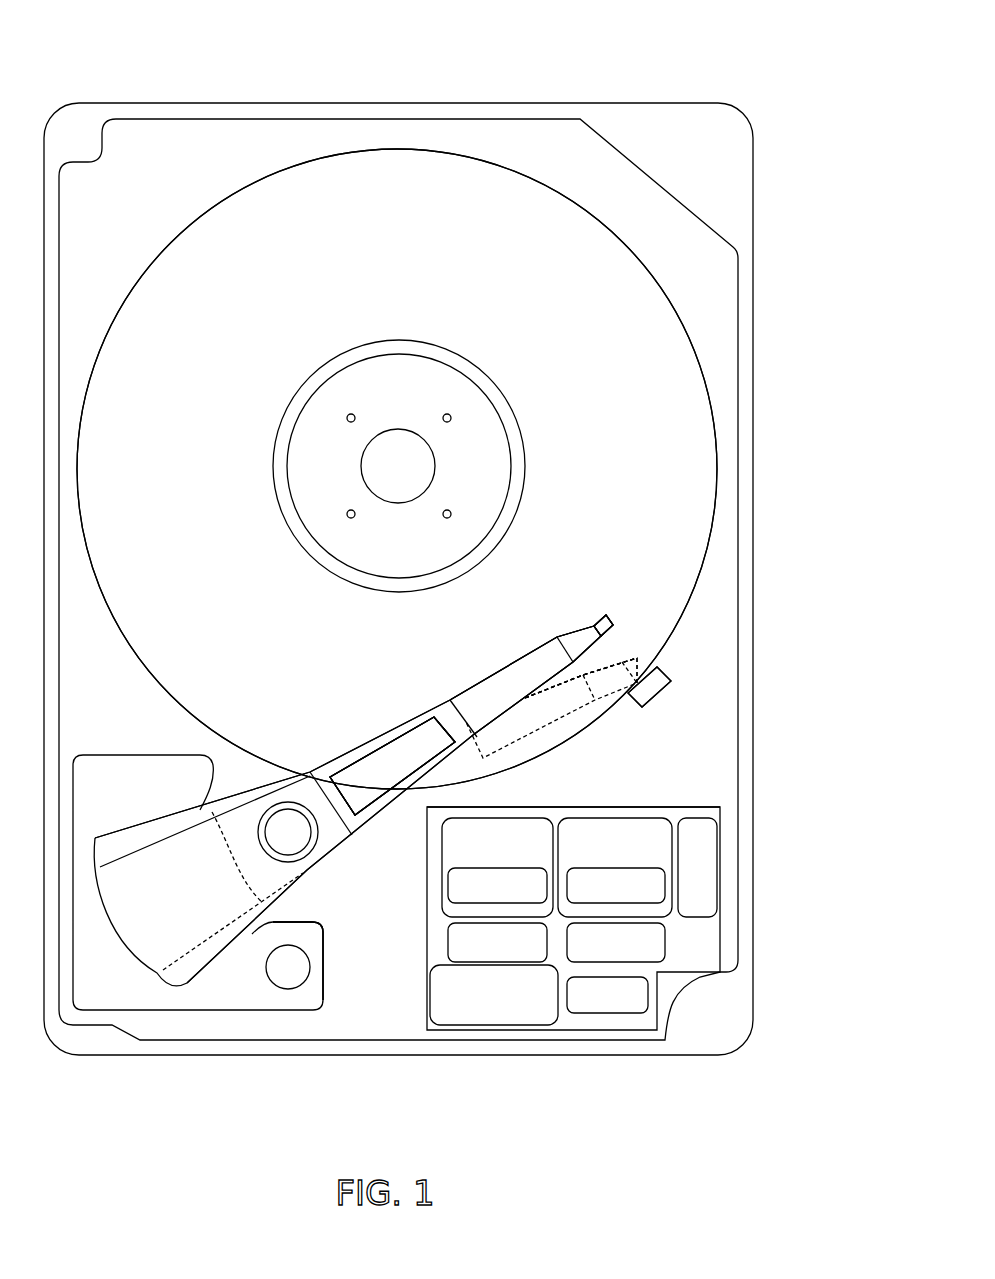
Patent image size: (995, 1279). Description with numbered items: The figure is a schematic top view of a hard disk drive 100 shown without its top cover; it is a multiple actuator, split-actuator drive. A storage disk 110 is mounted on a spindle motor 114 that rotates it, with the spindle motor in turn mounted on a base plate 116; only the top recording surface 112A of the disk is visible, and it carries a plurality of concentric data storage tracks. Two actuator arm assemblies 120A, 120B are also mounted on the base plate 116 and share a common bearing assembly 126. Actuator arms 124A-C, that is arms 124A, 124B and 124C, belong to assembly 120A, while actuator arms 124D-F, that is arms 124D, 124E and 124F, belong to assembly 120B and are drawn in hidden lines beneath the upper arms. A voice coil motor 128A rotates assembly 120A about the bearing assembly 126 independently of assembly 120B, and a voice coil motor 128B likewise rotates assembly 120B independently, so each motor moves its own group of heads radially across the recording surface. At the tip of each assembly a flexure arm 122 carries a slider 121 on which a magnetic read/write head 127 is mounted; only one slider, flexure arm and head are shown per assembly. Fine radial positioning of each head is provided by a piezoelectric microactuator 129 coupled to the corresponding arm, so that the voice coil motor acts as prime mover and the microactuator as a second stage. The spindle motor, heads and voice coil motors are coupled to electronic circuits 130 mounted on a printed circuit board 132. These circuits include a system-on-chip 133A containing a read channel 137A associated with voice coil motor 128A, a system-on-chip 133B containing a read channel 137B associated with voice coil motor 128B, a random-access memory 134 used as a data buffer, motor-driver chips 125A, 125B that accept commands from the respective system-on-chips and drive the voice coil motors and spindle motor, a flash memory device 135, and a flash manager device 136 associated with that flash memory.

The hard disk drive 100 is at (133, 64).
The storage disk 110 is at (170, 244).
The top recording surface 112A is at (397, 469).
The spindle motor 114 is at (497, 404).
The base plate 116 is at (740, 607).
The actuator arm assembly 120A is at (341, 705).
The actuator arm assembly 120B is at (348, 804).
The slider 121 is at (603, 598).
The flexure arm 122 is at (592, 622).
The actuator arms 124A-C is at (367, 742).
The actuator arm 124A is at (392, 766).
The actuator arm 124B is at (392, 766).
The actuator arm 124C is at (392, 766).
The actuator arms 124D-F is at (425, 803).
The actuator arm 124D is at (581, 678).
The actuator arm 124E is at (581, 678).
The actuator arm 124F is at (581, 678).
The bearing assembly 126 is at (302, 860).
The read/write head 127 is at (645, 648).
The microactuator 129 is at (290, 989).
The voice coil motor 128A is at (325, 953).
The voice coil motor 128B is at (298, 961).
The electronic circuits 130 is at (590, 803).
The printed circuit board 132 is at (655, 806).
The random-access memory 134 is at (718, 866).
The system-on-chip 133A is at (497, 867).
The system-on-chip 133B is at (615, 867).
The read channel 137A is at (497, 885).
The read channel 137B is at (616, 885).
The motor-driver chip 125A is at (497, 942).
The motor-driver chip 125B is at (616, 942).
The flash memory device 135 is at (494, 995).
The flash manager device 136 is at (607, 995).